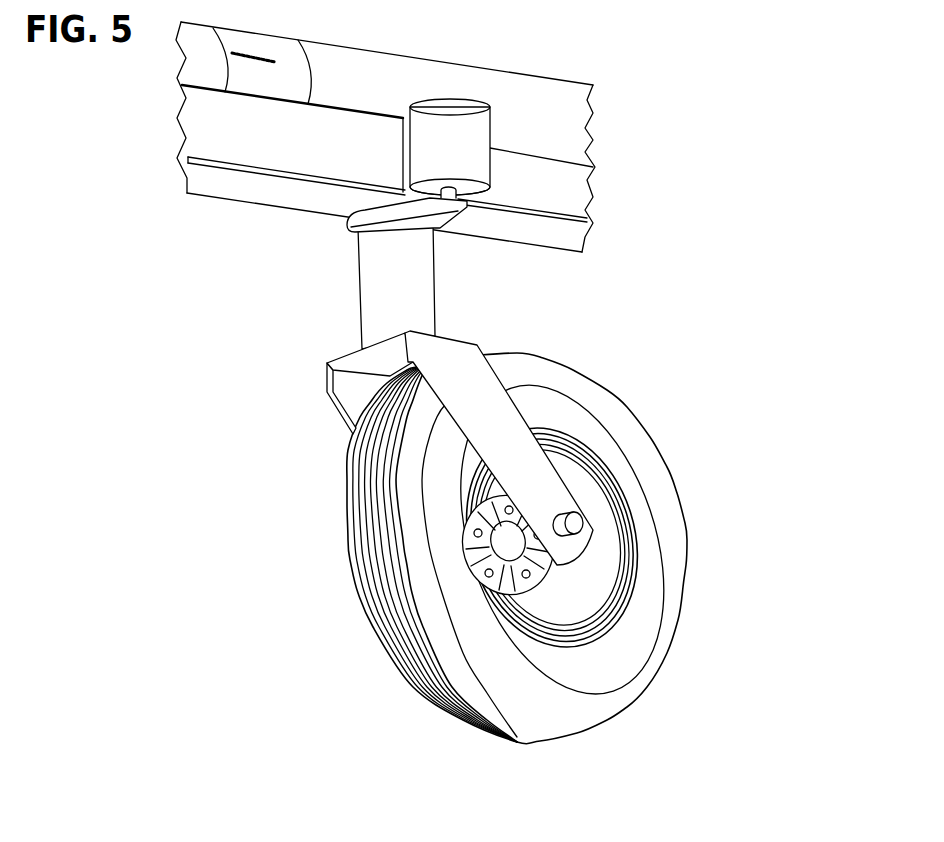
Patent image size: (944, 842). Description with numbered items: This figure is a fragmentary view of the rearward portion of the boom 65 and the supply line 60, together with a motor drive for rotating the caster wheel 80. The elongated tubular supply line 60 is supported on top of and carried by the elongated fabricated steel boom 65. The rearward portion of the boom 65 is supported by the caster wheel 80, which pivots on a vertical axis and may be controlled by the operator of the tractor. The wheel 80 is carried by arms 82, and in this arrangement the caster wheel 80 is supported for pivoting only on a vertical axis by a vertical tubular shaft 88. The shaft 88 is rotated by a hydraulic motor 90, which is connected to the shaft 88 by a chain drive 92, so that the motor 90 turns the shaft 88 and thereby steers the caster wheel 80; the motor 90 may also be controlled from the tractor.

The tubular supply line 60 is at (387, 72).
The boom 65 is at (222, 133).
The caster wheel 80 is at (623, 403).
The arms 82 is at (500, 422).
The vertical tubular shaft 88 is at (405, 293).
The hydraulic motor 90 is at (467, 140).
The chain drive 92 is at (452, 213).